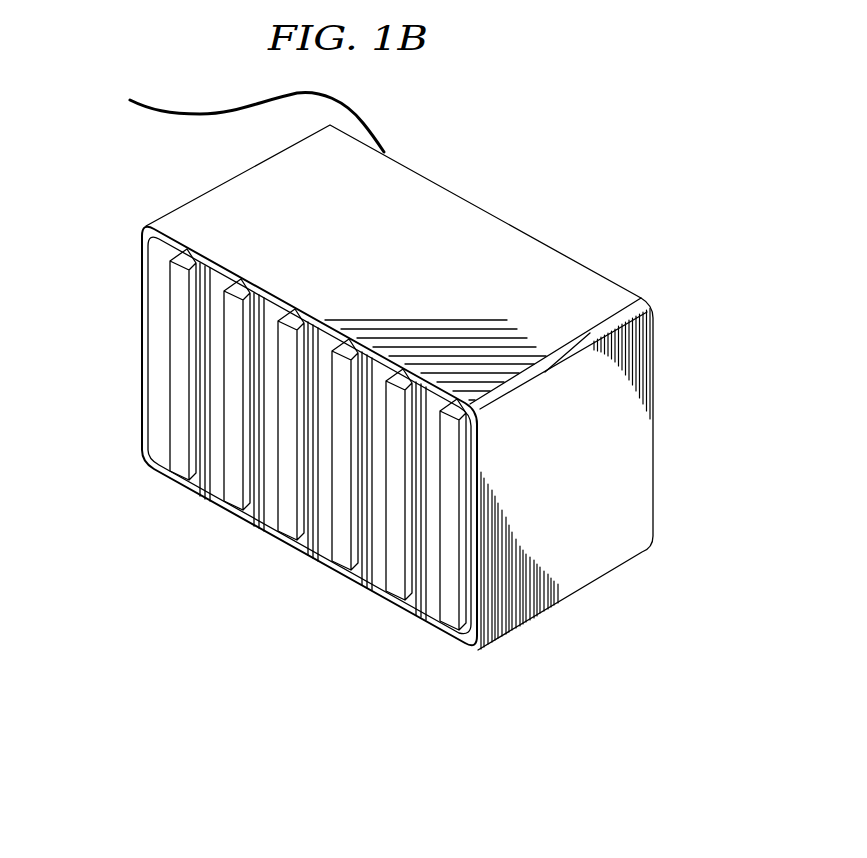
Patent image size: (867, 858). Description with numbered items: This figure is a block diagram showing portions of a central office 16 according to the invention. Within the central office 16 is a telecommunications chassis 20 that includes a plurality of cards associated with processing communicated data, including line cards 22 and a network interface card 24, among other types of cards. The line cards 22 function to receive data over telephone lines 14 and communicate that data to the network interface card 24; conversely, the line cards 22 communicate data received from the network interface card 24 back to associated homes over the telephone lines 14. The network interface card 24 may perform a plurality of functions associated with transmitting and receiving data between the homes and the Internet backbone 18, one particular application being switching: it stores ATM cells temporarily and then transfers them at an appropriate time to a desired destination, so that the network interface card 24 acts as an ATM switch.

The telephone lines 14 is at (487, 213).
The central office 16 is at (581, 150).
The Internet backbone 18 is at (230, 113).
The telecommunications chassis 20 is at (352, 311).
The line cards 22 is at (177, 475).
The network interface card 24 is at (285, 538).